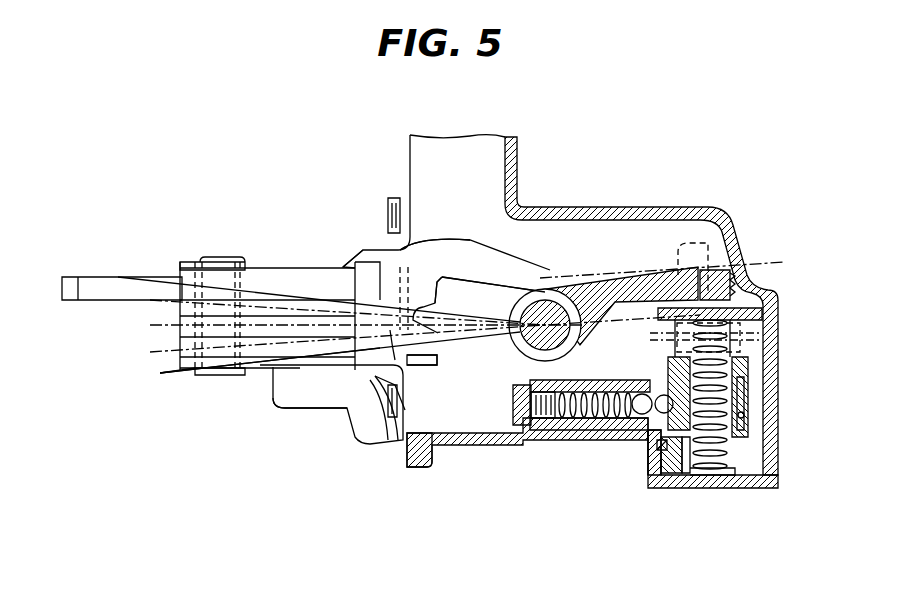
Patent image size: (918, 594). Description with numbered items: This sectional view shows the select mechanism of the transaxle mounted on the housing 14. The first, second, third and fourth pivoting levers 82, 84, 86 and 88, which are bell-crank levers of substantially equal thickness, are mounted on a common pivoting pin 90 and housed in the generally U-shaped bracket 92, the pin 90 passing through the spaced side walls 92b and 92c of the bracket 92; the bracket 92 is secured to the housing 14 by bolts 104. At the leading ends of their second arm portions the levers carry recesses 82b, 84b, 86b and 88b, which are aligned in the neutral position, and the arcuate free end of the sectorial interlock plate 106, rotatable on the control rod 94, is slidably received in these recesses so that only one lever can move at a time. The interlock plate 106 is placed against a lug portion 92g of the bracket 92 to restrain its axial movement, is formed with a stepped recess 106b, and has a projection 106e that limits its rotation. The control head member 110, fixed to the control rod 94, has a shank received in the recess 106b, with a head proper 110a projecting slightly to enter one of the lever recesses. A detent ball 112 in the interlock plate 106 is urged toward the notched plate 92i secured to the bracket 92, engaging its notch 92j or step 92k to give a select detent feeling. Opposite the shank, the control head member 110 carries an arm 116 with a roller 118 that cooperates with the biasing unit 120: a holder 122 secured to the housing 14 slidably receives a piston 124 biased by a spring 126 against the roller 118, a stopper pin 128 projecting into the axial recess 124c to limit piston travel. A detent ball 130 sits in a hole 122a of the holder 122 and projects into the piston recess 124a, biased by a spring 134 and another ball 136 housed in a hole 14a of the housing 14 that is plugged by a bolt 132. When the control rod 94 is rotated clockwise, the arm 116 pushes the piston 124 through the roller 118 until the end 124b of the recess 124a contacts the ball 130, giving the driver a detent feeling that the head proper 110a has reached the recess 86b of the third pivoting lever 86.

The housing 14 is at (519, 165).
The hole 14a is at (527, 432).
The first pivoting lever 82 is at (180, 360).
The recess 82b is at (365, 350).
The second pivoting lever 84 is at (180, 333).
The recess 84b is at (330, 364).
The third pivoting lever 86 is at (180, 310).
The recess 86b is at (310, 286).
The fourth pivoting lever 88 is at (100, 290).
The recess 88b is at (345, 278).
The common pivoting pin 90 is at (215, 378).
The bracket 92 is at (255, 380).
The side wall 92b is at (190, 375).
The side wall 92c is at (203, 262).
The lug portion 92g is at (438, 358).
The notched plate 92i is at (296, 405).
The notch 92j is at (386, 445).
The step 92k is at (368, 395).
The control rod 94 is at (560, 298).
The bolt 104 is at (390, 215).
The interlock plate 106 is at (485, 430).
The stepped recess 106b is at (443, 265).
The projection 106e is at (362, 255).
The control head member 110 is at (492, 278).
The head proper 110a is at (390, 335).
The detent ball 112 is at (412, 468).
The arm 116 is at (622, 285).
The roller 118 is at (694, 260).
The biasing unit 120 is at (668, 470).
The holder 122 is at (766, 488).
The hole 122a is at (662, 385).
The piston 124 is at (740, 310).
The recess 124a is at (698, 478).
The end of recess 124b is at (645, 445).
The axially extending recess 124c is at (745, 397).
The spring 126 is at (706, 470).
The stopper pin 128 is at (738, 476).
The detent ball 130 is at (655, 450).
The bolt 132 is at (513, 428).
The spring 134 is at (582, 420).
The ball 136 is at (636, 396).